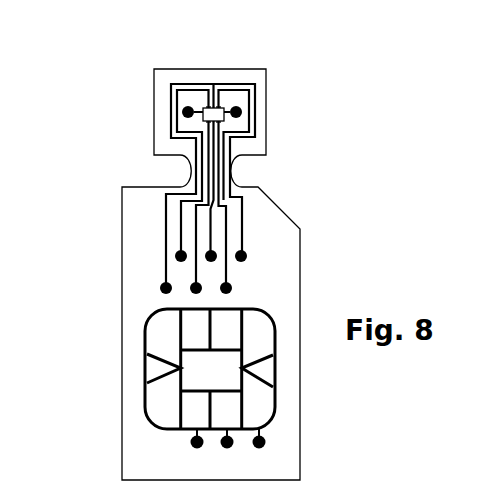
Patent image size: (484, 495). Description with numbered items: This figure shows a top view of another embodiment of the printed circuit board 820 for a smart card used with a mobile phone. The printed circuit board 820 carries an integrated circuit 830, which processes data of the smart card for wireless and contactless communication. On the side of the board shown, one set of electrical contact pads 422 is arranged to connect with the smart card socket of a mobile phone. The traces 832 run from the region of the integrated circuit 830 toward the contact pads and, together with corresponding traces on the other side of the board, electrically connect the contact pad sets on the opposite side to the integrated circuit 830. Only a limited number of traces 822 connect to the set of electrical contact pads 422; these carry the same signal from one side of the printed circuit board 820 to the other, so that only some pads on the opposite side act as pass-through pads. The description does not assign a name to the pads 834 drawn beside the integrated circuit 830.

The printed circuit board 820 is at (153, 80).
The integrated circuit 830 is at (223, 108).
The chip contact pads 834 is at (183, 113).
The traces 832 is at (165, 231).
The electrical contact pads 422 is at (145, 337).
The traces 822 is at (190, 441).